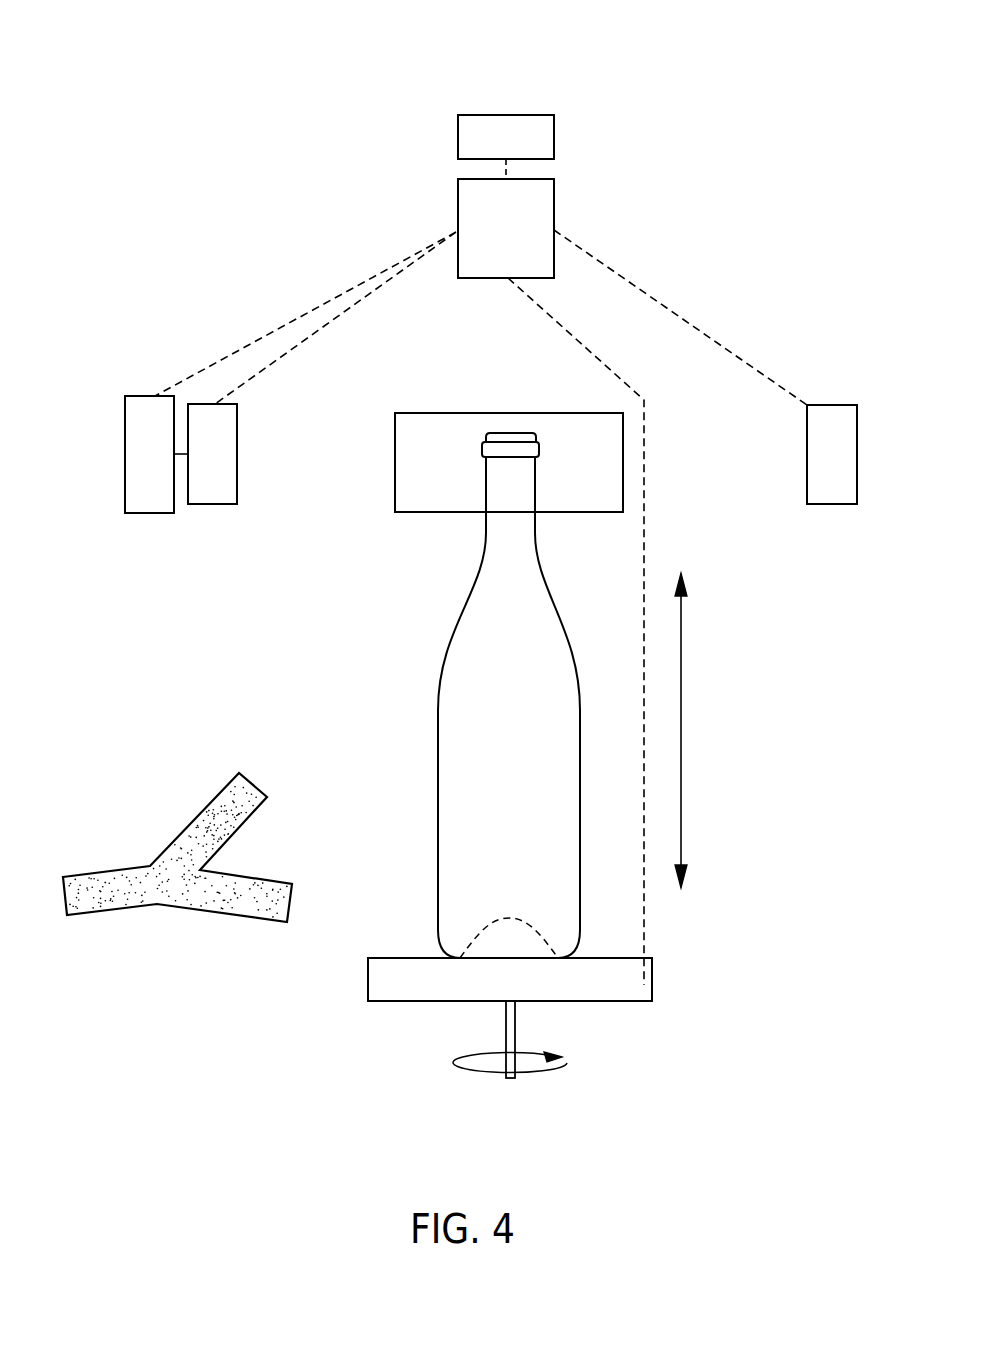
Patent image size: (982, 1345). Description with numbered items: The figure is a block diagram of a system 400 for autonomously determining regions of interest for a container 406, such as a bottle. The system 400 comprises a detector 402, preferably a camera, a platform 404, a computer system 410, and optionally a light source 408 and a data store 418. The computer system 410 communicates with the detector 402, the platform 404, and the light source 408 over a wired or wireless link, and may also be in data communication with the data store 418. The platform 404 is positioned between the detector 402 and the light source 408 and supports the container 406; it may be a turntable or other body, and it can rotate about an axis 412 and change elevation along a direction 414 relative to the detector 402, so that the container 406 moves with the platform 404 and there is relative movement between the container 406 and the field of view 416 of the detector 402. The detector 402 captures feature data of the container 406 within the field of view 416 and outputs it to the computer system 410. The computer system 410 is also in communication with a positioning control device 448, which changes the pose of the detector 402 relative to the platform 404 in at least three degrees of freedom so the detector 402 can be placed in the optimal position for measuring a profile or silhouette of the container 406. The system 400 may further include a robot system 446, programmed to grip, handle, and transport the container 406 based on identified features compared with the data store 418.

The system 400 is at (205, 92).
The detector 402 is at (213, 505).
The platform 404 is at (425, 997).
The container 406 is at (452, 778).
The light source 408 is at (830, 505).
The computer system 410 is at (458, 208).
The axis 412 is at (510, 1080).
The direction 414 is at (683, 757).
The field of view 416 is at (440, 412).
The data store 418 is at (458, 138).
The robot system 446 is at (227, 900).
The positioning control device 448 is at (150, 513).